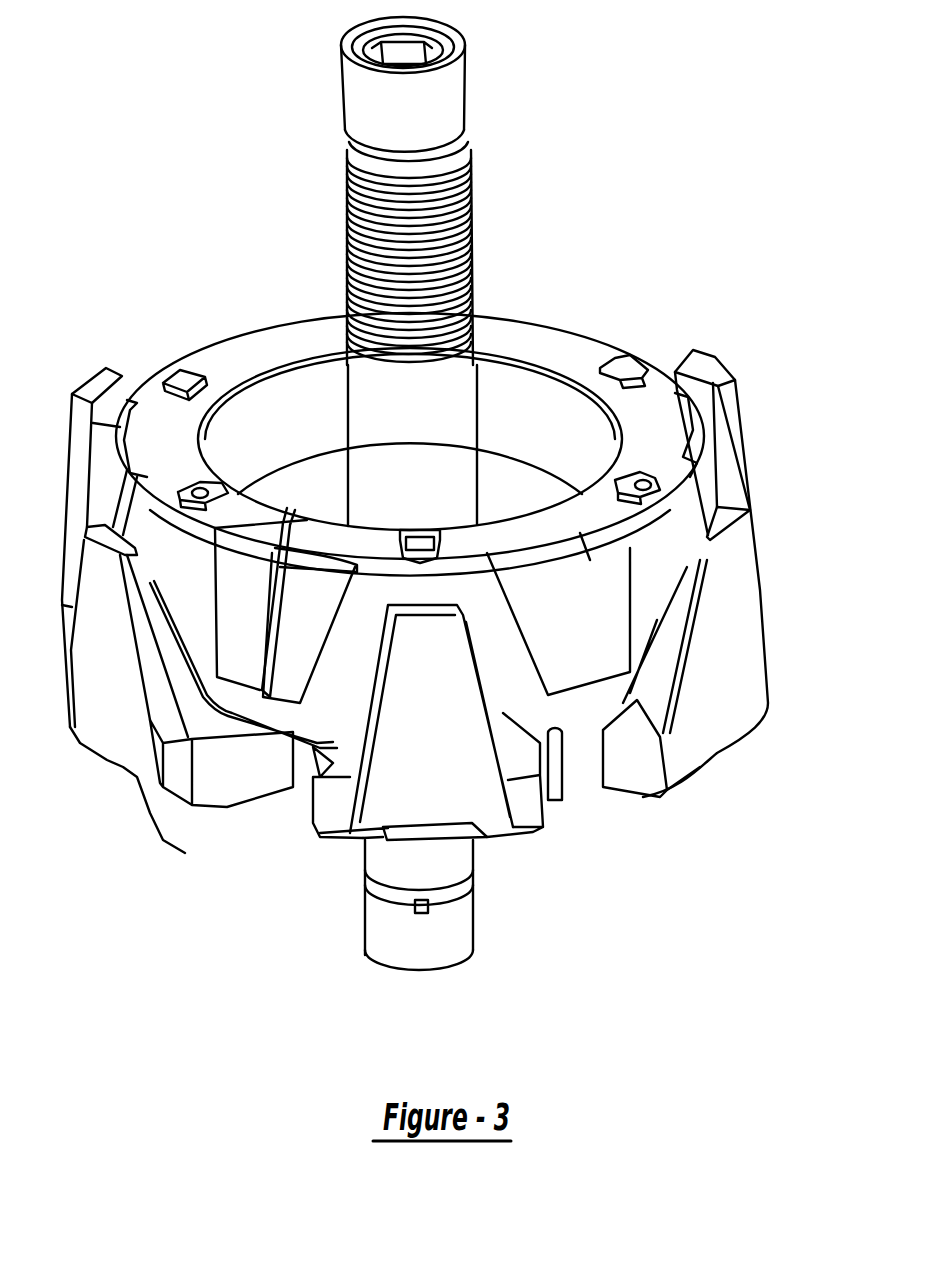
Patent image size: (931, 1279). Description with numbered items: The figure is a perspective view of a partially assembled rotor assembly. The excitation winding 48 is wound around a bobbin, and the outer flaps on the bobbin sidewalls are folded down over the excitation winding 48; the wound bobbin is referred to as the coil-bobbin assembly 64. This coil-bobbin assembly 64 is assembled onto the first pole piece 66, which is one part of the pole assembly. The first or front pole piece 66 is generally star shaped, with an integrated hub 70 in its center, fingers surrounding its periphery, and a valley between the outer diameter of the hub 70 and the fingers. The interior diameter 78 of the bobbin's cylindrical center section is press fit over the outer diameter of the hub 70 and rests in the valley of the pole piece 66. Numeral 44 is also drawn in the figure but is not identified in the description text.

The interior diameter 78 is at (255, 430).
The coil-bobbin assembly 64 is at (548, 320).
The hub 70 is at (518, 480).
The first pole piece 66 is at (728, 637).
The foot block 44 is at (305, 658).
The excitation winding 48 is at (333, 680).